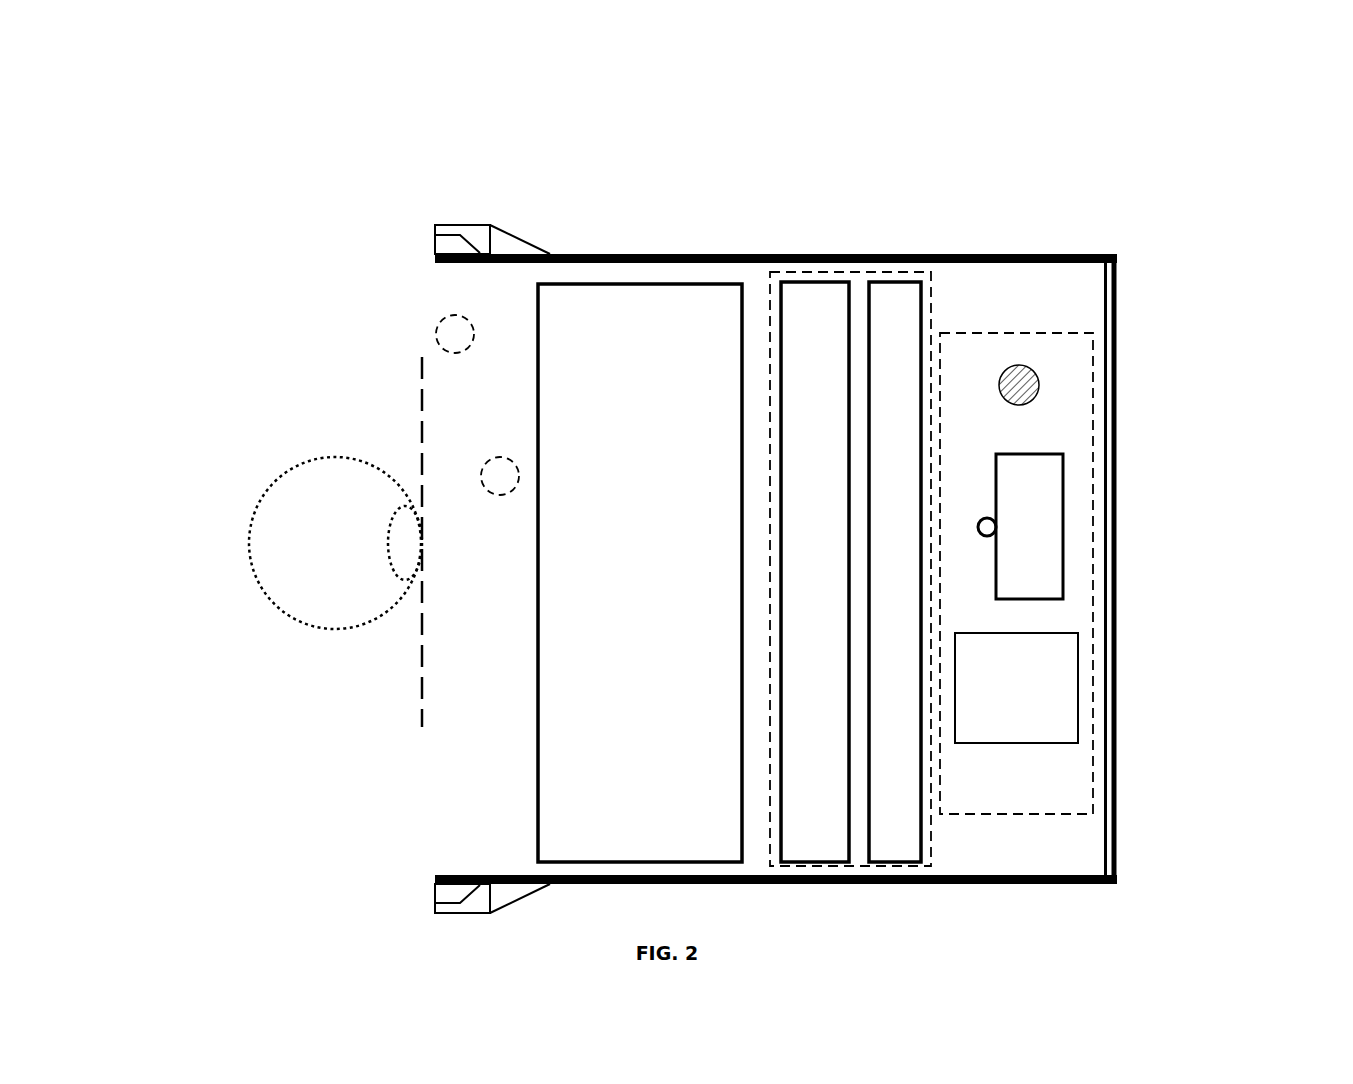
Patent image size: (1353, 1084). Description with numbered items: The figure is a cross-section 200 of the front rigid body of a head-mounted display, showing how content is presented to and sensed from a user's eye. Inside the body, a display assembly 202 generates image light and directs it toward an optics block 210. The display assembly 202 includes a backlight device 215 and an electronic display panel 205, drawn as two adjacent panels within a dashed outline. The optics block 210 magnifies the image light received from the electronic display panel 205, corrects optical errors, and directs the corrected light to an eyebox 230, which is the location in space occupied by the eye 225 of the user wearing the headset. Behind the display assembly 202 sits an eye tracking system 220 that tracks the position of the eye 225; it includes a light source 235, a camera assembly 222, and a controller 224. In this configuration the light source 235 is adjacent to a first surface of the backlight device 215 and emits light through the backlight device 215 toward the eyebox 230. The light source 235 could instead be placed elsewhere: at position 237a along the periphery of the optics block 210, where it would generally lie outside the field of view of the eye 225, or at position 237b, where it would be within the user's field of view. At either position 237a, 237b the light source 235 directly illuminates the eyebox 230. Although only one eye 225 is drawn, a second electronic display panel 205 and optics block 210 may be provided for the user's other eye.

The cross-section 200 is at (607, 476).
The display assembly 202 is at (1039, 477).
The electronic display panel 205 is at (850, 282).
The optics block 210 is at (570, 333).
The backlight device 215 is at (922, 347).
The eye tracking system 220 is at (1119, 632).
The camera assembly 222 is at (1050, 600).
The controller 224 is at (1016, 688).
The eye 225 is at (248, 545).
The eyebox 230 is at (422, 470).
The light source 235 is at (1020, 405).
The position 237a is at (436, 333).
The position 237b is at (507, 496).